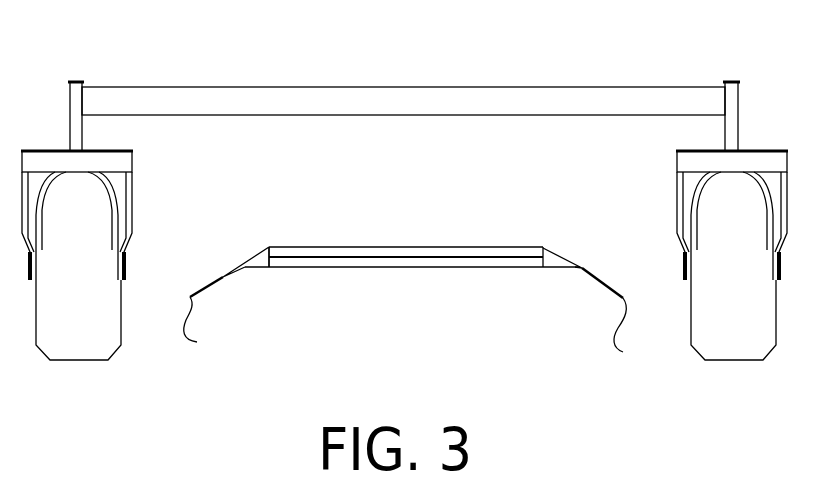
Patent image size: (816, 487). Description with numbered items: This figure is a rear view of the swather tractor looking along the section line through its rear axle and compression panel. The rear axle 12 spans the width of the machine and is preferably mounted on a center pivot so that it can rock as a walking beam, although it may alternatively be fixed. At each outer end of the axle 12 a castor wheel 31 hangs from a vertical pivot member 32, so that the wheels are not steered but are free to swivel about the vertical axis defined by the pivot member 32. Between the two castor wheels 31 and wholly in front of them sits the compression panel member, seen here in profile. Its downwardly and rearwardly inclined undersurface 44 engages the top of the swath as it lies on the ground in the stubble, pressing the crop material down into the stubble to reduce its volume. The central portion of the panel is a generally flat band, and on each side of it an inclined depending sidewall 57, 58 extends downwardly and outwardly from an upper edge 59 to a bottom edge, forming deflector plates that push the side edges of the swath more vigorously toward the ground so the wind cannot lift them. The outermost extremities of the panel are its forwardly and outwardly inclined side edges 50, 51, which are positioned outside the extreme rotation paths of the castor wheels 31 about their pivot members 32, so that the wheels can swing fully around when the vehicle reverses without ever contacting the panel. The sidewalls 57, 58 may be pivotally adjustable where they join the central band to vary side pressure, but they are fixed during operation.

The rear axle 12 is at (393, 97).
The vertical pivot member 32 is at (82, 130).
The castor wheel 31 is at (83, 334).
The undersurface 44 is at (418, 268).
The inclined depending sidewall 57 is at (220, 270).
The upper edge 59 is at (270, 245).
The side edge 50 is at (210, 316).
The inclined depending sidewall 58 is at (598, 268).
The side edge 51 is at (611, 326).